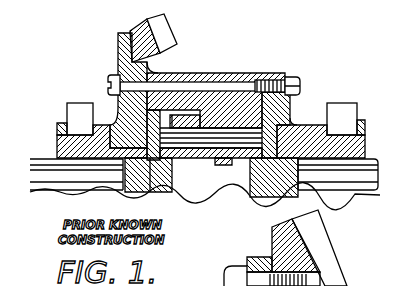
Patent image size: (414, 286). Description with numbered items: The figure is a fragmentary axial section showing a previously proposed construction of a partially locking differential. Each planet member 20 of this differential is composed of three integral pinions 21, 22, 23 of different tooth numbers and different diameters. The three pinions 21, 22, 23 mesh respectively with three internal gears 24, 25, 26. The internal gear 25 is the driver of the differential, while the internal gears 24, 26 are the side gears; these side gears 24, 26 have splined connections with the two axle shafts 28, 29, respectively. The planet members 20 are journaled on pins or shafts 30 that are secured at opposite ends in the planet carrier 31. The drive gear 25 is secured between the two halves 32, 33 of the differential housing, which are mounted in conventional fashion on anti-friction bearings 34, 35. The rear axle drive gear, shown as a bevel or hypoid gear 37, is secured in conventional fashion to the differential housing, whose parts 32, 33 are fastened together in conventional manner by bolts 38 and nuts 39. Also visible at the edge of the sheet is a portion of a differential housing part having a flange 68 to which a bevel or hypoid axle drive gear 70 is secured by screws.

The planet member 20 is at (210, 158).
The pinion 21 is at (183, 160).
The pinion 22 is at (220, 162).
The pinion 23 is at (243, 170).
The internal gear 24 is at (145, 116).
The internal gear 25 is at (215, 73).
The internal gear 26 is at (274, 117).
The axle shaft 28 is at (113, 182).
The axle shaft 29 is at (360, 192).
The pin 30 is at (233, 140).
The planet carrier 31 is at (262, 185).
The differential housing half 32 is at (185, 74).
The differential housing half 33 is at (279, 75).
The anti-friction bearing 34 is at (72, 113).
The anti-friction bearing 35 is at (344, 110).
The bevel or hypoid gear 37 is at (163, 35).
The bolt 38 is at (137, 85).
The nut 39 is at (299, 78).
The flange 68 is at (255, 255).
The bevel or hypoid axle drive gear 70 is at (330, 262).